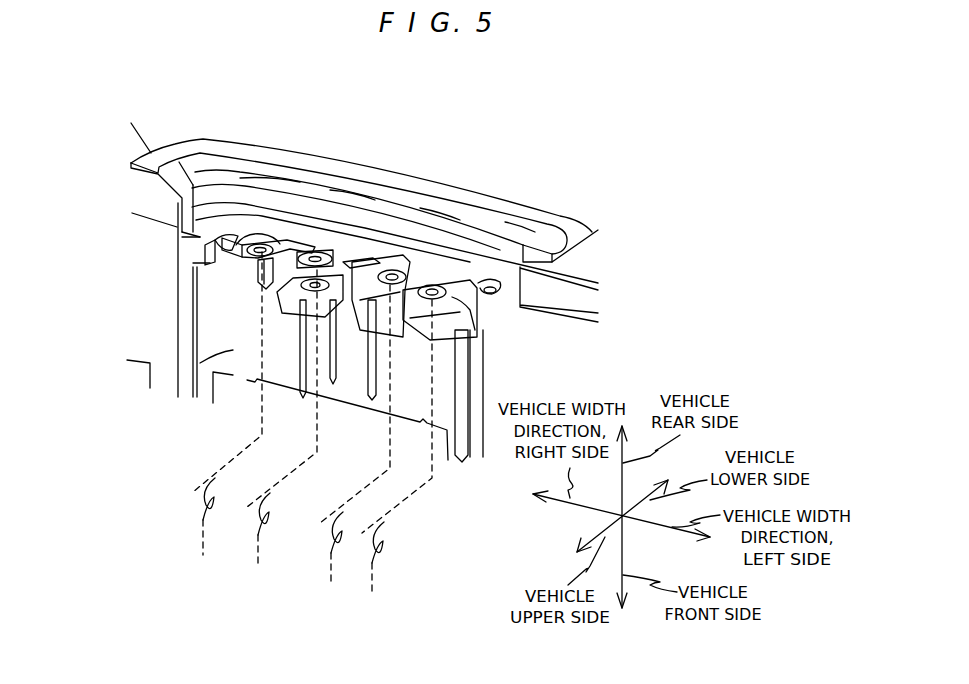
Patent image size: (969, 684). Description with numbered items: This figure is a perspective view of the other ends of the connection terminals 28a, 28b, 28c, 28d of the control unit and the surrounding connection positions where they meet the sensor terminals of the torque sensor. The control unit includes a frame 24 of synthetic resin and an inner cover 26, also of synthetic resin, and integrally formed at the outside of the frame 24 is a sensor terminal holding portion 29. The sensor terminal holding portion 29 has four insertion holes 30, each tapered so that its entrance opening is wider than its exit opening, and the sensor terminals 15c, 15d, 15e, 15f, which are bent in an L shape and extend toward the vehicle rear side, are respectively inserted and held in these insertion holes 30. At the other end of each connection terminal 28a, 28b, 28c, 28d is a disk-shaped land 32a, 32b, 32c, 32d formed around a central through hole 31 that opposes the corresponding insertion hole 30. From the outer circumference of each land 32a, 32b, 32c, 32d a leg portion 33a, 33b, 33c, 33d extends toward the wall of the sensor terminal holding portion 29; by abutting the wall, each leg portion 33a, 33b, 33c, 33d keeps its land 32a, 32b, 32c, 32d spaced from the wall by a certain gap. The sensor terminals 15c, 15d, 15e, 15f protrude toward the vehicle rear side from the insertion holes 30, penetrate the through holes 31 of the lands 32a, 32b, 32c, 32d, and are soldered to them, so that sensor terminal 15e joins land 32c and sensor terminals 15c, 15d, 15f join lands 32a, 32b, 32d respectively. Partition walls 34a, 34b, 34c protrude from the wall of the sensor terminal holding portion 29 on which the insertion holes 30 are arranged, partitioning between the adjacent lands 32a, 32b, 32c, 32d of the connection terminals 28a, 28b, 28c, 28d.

The sensor terminal 15c is at (394, 458).
The sensor terminal 15d is at (353, 446).
The sensor terminal 15e is at (280, 429).
The sensor terminal 15f is at (224, 414).
The frame 24 is at (144, 290).
The inner cover 26 is at (144, 193).
The connection terminal 28a is at (510, 223).
The connection terminal 28b is at (435, 283).
The connection terminal 28c is at (333, 257).
The connection terminal 28d is at (253, 233).
The sensor terminal holding portion 29 is at (200, 363).
The insertion hole 30 is at (307, 393).
The through hole 31 is at (272, 228).
The land 32a is at (480, 330).
The land 32b is at (458, 280).
The land 32c is at (296, 322).
The land 32d is at (262, 244).
The leg portion 33a is at (560, 293).
The leg portion 33b is at (393, 270).
The leg portion 33c is at (336, 256).
The leg portion 33d is at (232, 240).
The partition wall 34a is at (430, 330).
The partition wall 34b is at (368, 310).
The partition wall 34c is at (259, 280).